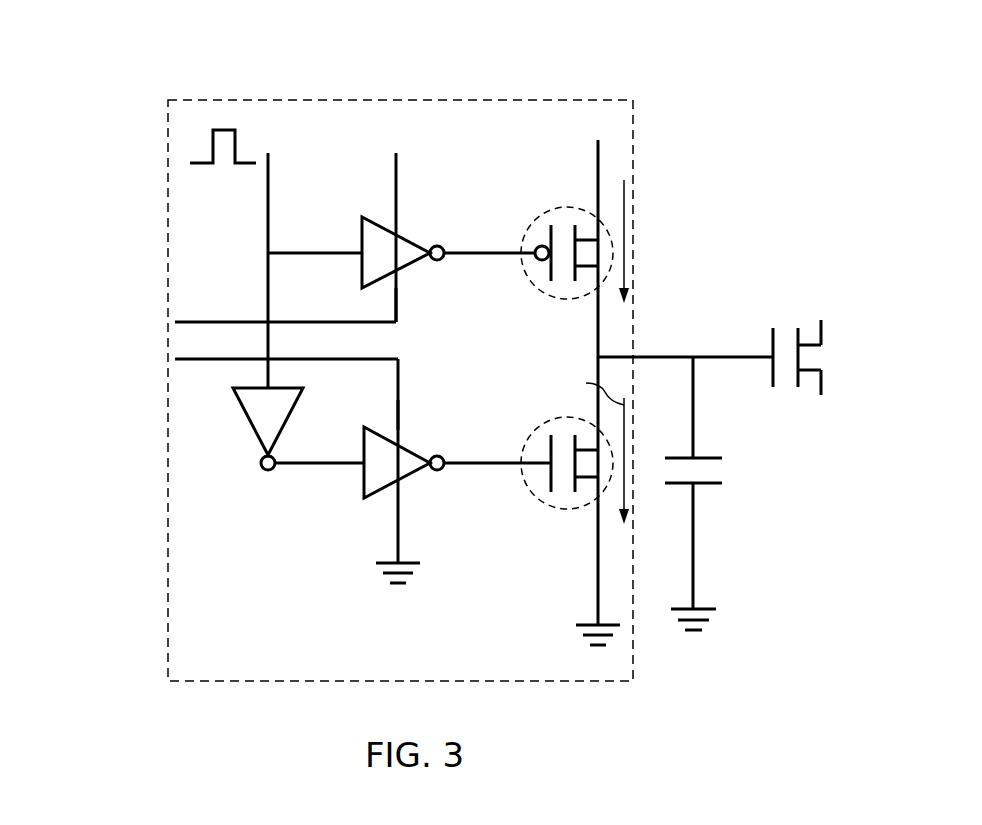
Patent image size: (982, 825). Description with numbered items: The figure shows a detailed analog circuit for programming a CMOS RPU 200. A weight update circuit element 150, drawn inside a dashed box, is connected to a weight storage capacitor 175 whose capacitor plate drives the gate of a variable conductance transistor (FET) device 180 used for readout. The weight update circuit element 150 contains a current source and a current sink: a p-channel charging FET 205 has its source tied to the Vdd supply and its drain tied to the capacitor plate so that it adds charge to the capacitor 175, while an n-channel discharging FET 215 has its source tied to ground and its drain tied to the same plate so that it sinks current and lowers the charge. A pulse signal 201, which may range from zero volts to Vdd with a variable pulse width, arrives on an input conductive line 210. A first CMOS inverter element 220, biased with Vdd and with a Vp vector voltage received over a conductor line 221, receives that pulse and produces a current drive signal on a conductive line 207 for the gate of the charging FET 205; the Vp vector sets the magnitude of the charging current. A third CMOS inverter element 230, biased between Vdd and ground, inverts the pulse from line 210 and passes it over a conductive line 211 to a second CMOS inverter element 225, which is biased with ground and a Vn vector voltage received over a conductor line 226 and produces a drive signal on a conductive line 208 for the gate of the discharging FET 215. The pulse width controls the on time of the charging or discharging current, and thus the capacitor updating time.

The CMOS RPU 200 is at (139, 32).
The weight update circuit element 150 is at (158, 186).
The pulse signal 201 is at (212, 140).
The input conductive line 210 is at (268, 226).
The first CMOS inverter element 220 is at (362, 236).
The conductor line 221 is at (397, 292).
The conductive line 207 is at (474, 249).
The p-channel FET 205 is at (537, 220).
The third CMOS inverter element 230 is at (244, 412).
The conductive line 211 is at (290, 467).
The second CMOS inverter element 225 is at (364, 490).
The conductor line 226 is at (400, 414).
The conductive line 208 is at (471, 468).
The n-channel FET 215 is at (545, 510).
The variable conductance transistor (FET) device 180 is at (757, 327).
The weight storage capacitor 175 is at (742, 500).